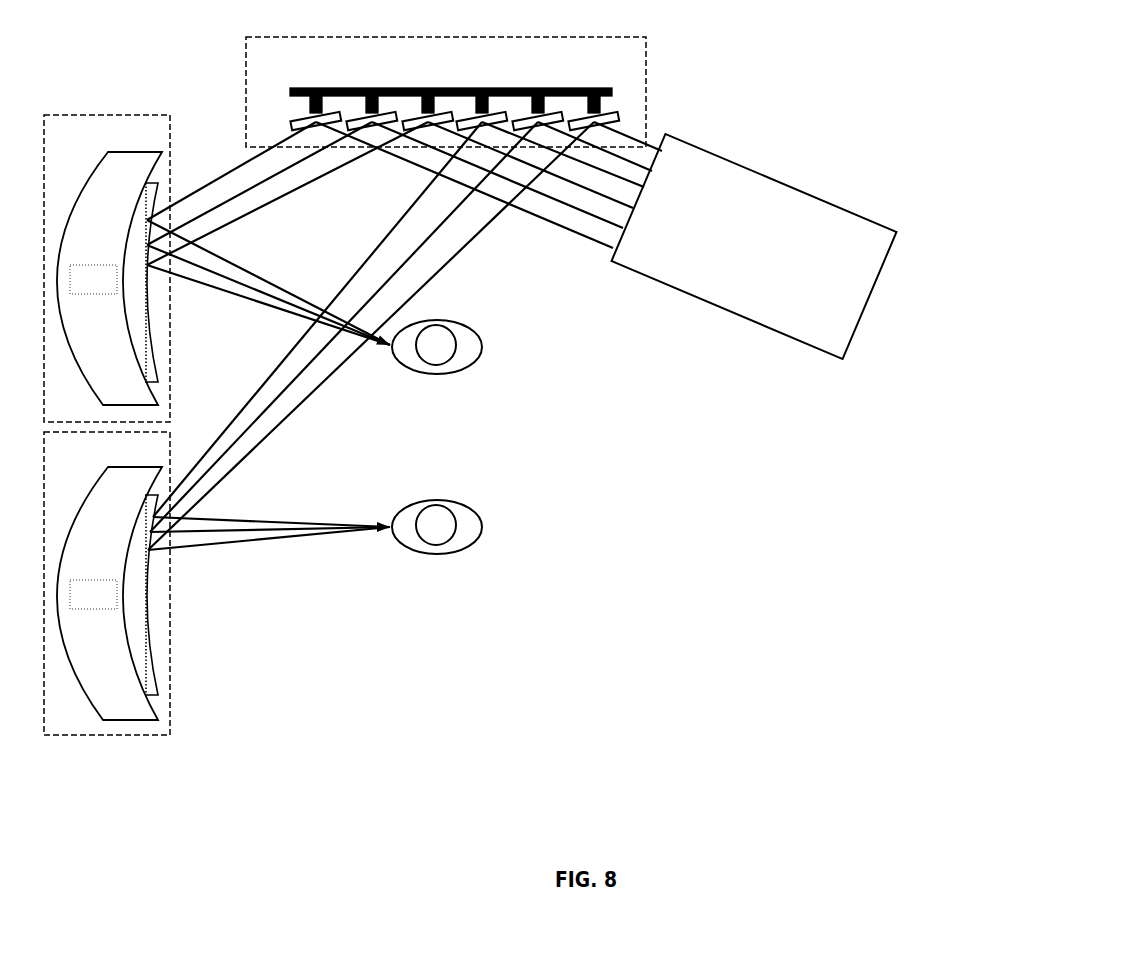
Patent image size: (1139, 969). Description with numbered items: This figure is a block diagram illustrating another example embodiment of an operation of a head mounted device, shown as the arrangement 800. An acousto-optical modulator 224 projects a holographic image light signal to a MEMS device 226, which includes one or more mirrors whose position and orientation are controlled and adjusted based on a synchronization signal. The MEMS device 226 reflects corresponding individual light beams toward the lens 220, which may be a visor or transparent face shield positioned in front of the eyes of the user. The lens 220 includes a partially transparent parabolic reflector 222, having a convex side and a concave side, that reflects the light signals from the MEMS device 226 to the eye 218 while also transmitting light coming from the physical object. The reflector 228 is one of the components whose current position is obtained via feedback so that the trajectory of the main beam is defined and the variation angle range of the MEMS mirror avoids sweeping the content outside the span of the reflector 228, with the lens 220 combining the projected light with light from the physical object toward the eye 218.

The optical system 800 is at (1061, 88).
The eye 218 is at (452, 372).
The lens 220 is at (107, 425).
The partially transparent parabolic reflector 222 is at (93, 437).
The acousto-optical modulator 224 is at (754, 246).
The MEMS device 226 is at (446, 92).
The reflector 228 is at (148, 367).